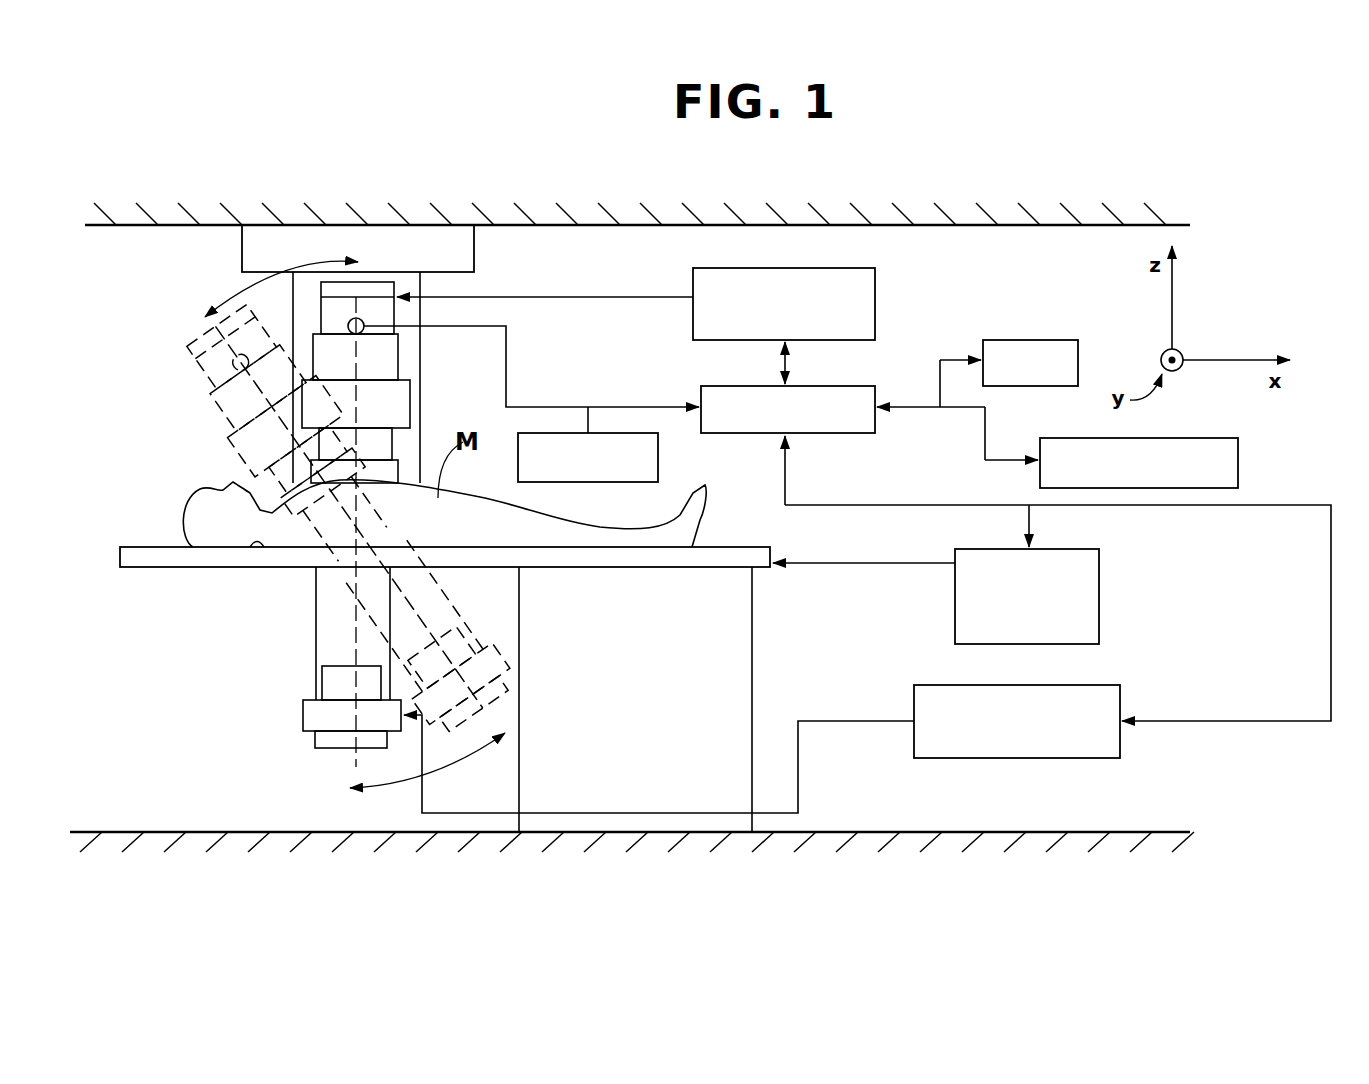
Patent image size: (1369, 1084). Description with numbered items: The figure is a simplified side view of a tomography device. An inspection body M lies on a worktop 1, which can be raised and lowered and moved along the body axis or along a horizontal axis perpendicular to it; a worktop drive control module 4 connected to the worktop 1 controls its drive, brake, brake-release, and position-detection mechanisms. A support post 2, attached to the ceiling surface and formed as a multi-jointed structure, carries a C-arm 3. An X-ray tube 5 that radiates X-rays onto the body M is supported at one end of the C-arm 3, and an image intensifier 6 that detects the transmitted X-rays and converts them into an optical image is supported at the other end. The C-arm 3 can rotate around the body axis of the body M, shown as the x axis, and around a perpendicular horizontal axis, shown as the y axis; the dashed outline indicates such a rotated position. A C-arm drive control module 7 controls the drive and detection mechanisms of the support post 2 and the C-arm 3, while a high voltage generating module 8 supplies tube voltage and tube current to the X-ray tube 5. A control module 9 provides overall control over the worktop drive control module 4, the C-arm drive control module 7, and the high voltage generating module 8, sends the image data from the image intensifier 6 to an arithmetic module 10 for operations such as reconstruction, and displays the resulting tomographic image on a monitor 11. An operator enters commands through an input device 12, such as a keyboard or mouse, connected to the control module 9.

The worktop 1 is at (766, 565).
The support post 2 is at (422, 408).
The C-arm 3 is at (272, 472).
The worktop drive control module 4 is at (1100, 606).
The X-ray tube 5 is at (303, 722).
The image intensifier 6 is at (392, 364).
The C-arm drive control module 7 is at (876, 292).
The high voltage generating module 8 is at (977, 760).
The control module 9 is at (736, 385).
The arithmetic module 10 is at (1197, 440).
The monitor 11 is at (1060, 340).
The input device 12 is at (632, 482).